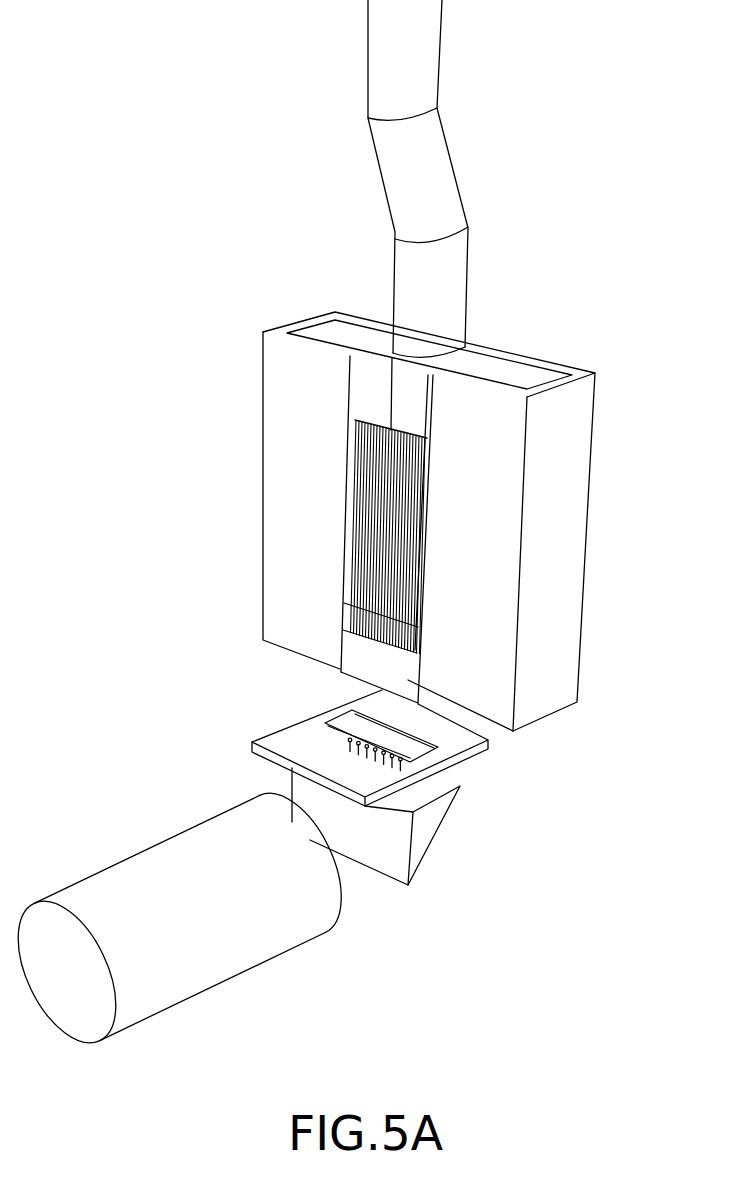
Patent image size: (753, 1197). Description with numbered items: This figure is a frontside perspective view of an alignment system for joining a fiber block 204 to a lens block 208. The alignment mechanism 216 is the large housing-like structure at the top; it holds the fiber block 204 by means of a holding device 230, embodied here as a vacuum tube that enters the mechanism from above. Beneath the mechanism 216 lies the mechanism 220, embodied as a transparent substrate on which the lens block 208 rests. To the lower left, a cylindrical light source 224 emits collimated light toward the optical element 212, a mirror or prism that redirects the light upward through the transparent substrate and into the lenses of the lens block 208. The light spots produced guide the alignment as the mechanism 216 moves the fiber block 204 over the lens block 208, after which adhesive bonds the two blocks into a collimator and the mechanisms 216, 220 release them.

The fiber block 204 is at (520, 730).
The lens block 208 is at (457, 781).
The optical element 212 is at (422, 852).
The alignment mechanism 216 is at (532, 625).
The mechanism 220 is at (418, 703).
The light source 224 is at (243, 940).
The holding device 230 is at (442, 327).